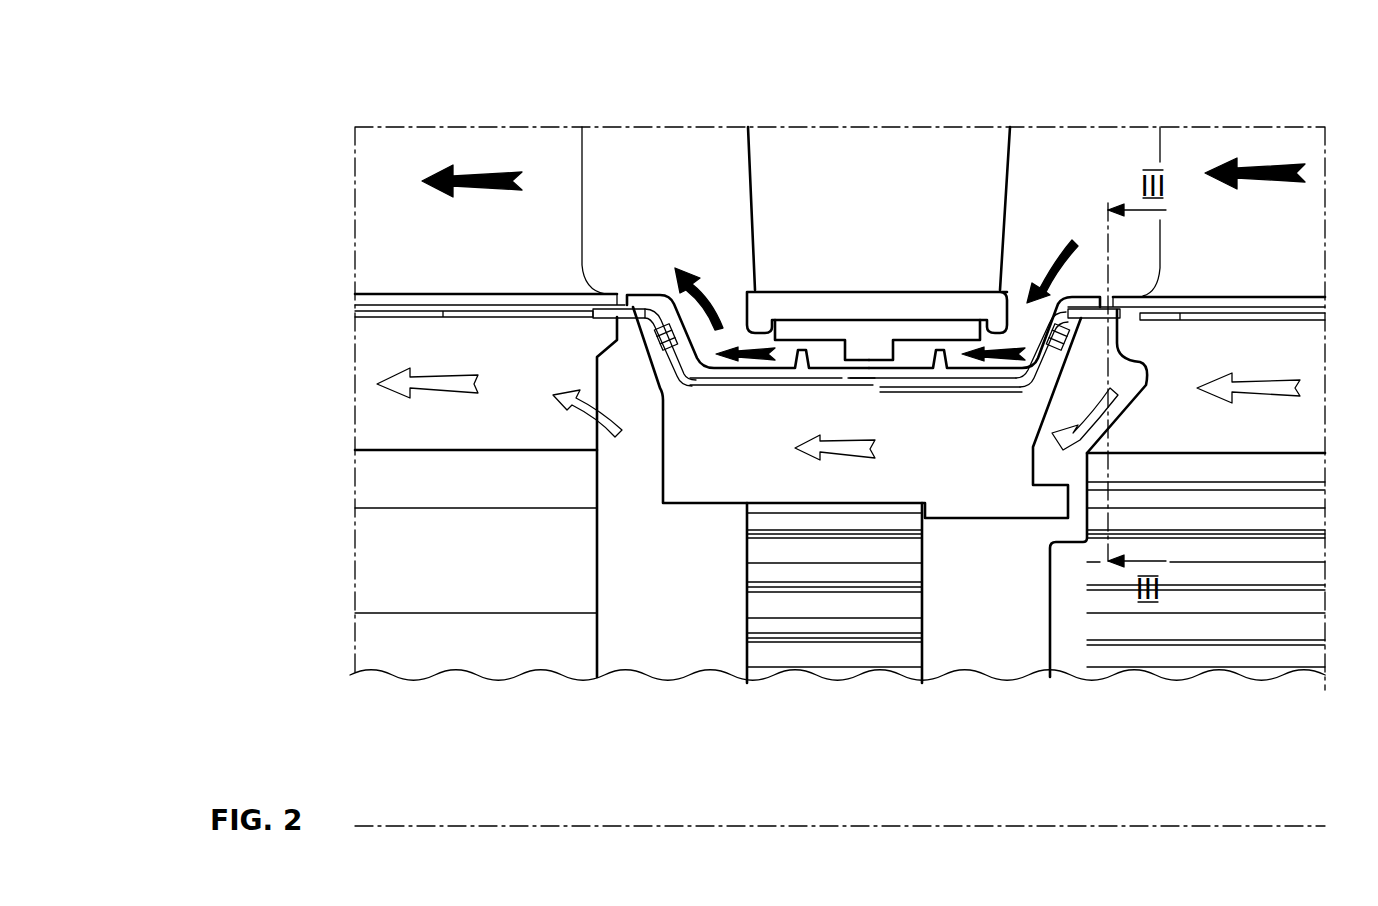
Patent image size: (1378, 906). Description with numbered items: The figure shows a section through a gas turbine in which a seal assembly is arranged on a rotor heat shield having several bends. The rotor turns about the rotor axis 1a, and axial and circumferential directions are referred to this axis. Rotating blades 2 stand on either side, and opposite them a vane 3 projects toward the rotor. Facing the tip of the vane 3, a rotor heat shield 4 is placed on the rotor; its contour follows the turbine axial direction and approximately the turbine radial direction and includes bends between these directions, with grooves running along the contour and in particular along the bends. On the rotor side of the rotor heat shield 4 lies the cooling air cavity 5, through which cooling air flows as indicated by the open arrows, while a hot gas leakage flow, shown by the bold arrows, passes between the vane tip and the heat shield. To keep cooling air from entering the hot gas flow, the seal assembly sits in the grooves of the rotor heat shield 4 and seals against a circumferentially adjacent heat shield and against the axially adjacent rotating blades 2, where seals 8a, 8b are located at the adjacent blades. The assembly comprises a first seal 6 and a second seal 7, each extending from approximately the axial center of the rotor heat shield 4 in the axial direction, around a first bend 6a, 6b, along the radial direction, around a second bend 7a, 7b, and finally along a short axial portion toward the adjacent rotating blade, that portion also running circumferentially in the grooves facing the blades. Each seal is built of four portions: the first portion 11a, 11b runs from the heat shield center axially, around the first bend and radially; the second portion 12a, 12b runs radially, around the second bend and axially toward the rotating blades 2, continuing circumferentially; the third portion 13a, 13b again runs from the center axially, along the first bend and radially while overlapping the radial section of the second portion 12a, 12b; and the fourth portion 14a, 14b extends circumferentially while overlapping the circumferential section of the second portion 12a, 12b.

The rotor axis 1a is at (523, 826).
The rotating blade 2 is at (460, 246).
The vane 3 is at (865, 246).
The rotor heat shield 4 is at (851, 478).
The cooling air cavity 5 is at (1258, 427).
The first seal of seal assembly 6 is at (936, 398).
The first bend of the seal assembly 6a is at (1040, 392).
The first bend of the seal assembly 6b is at (1077, 307).
The second seal of seal assembly 7 is at (778, 398).
The second bend of seal assembly 7a is at (673, 395).
The second bend of seal assembly 7b is at (658, 312).
The seal at adjacent rotating blade 8a is at (1178, 322).
The seal at adjacent rotating blade 8b is at (442, 318).
The first portion of seal assembly 11a is at (917, 380).
The first portion of seal assembly 11b is at (786, 380).
The second portion of seal assembly 12a is at (1090, 308).
The second portion of seal assembly 12b is at (640, 308).
The third portion of seal assembly 13a is at (985, 390).
The third portion of seal assembly 13b is at (722, 388).
The fourth portion of seal assembly 14a is at (1098, 330).
The fourth portion of seal assembly 14b is at (630, 330).